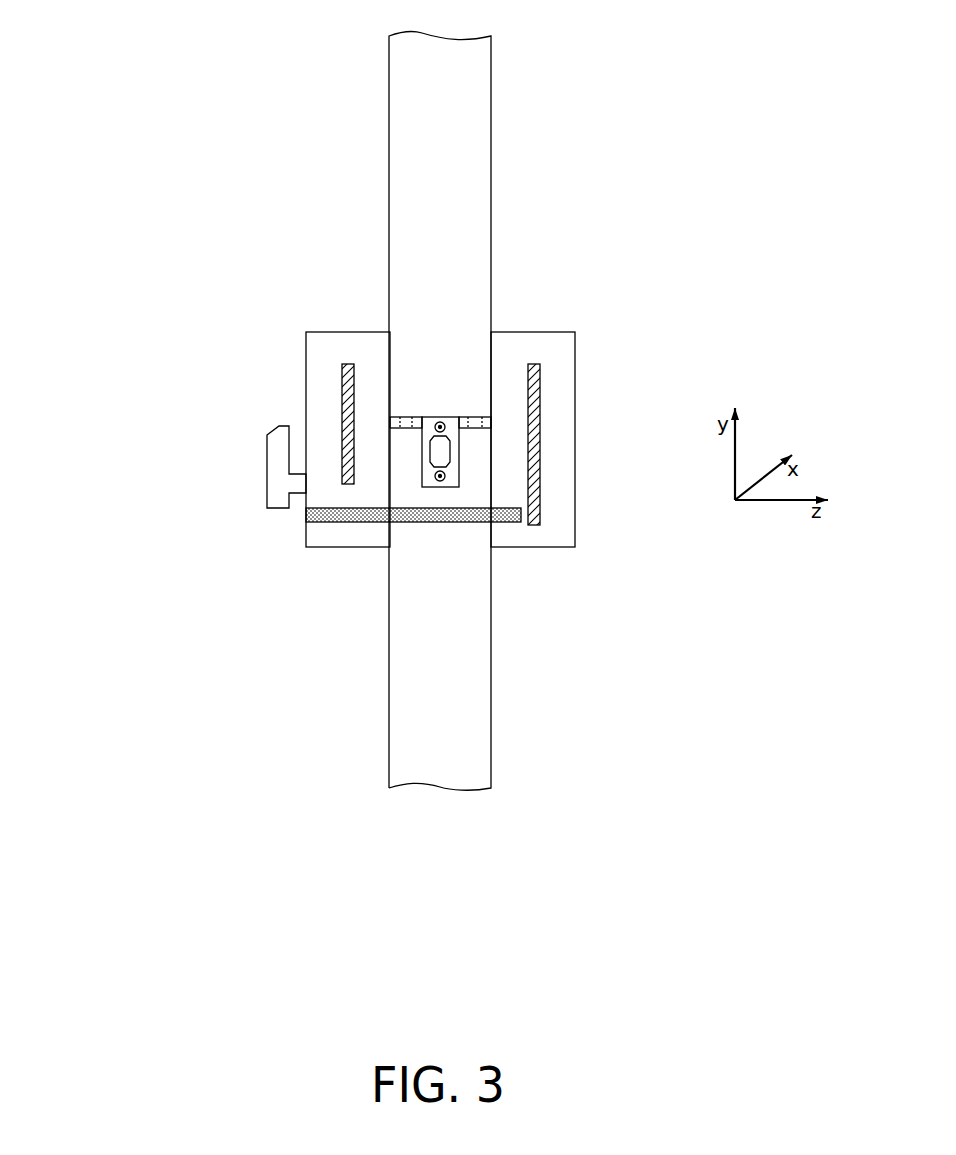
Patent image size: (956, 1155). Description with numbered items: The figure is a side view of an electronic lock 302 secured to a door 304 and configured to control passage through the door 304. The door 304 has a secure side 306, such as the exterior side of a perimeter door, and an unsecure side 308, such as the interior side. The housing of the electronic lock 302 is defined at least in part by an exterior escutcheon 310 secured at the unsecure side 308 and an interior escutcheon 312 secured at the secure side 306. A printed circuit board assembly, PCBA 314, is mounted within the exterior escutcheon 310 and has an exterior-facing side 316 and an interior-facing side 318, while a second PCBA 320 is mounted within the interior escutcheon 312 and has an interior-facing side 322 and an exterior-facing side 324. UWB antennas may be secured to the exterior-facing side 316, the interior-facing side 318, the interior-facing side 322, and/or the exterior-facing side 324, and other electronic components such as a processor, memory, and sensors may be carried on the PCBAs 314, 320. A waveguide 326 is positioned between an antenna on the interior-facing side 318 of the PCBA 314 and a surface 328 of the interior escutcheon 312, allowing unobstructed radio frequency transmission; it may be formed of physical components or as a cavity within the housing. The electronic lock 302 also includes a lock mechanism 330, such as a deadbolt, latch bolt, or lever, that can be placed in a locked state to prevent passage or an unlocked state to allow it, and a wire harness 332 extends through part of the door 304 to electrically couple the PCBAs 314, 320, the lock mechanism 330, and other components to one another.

The electronic lock 302 is at (548, 250).
The door 304 is at (389, 153).
The secure side 306 is at (152, 74).
The unsecure side 308 is at (703, 73).
The exterior escutcheon 310 is at (533, 332).
The interior escutcheon 312 is at (348, 332).
The printed circuit board assembly (PCBA) 314 is at (540, 387).
The exterior-facing side 316 is at (541, 445).
The interior-facing side 318 is at (528, 383).
The PCBA 320 is at (342, 393).
The interior-facing side 322 is at (342, 423).
The exterior-facing side 324 is at (354, 373).
The waveguide 326 is at (343, 523).
The surface 328 is at (305, 532).
The lock mechanism 330 is at (440, 487).
The wire harness 332 is at (408, 416).